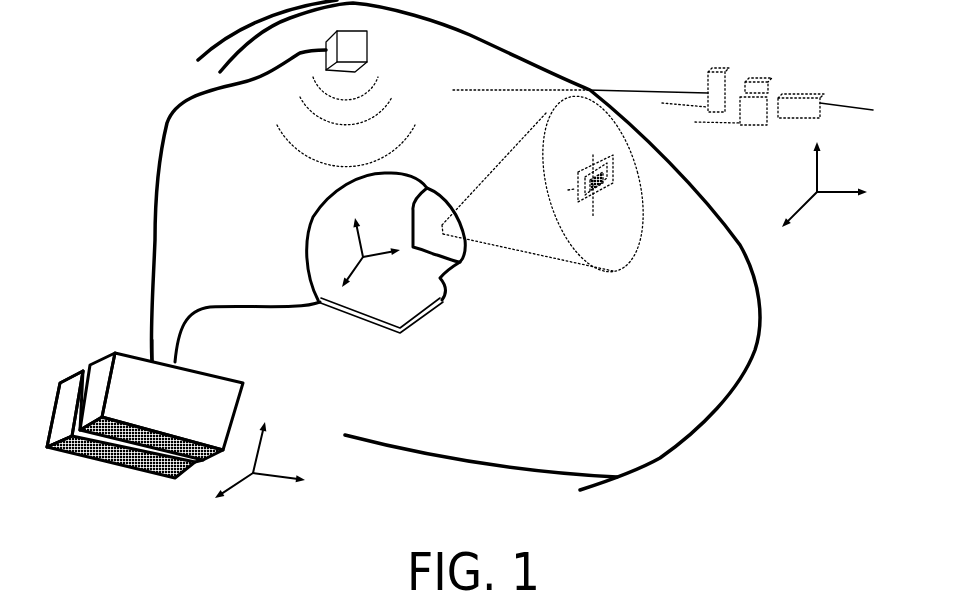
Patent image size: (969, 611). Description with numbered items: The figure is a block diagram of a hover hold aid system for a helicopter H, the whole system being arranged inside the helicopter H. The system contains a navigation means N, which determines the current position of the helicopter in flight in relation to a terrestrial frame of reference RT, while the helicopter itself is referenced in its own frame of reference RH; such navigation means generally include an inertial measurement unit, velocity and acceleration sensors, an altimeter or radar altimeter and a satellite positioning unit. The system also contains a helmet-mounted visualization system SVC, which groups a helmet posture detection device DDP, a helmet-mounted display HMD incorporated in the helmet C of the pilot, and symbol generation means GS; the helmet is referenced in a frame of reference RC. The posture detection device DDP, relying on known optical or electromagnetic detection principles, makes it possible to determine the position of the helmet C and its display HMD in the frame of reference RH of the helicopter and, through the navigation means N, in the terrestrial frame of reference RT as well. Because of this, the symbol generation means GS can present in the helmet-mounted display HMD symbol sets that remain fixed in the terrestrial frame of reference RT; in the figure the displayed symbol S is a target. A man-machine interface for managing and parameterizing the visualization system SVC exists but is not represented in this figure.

The helmet posture detection device DDP is at (367, 40).
The helmet-mounted visualization system SVC is at (301, 146).
The symbol S is at (617, 180).
The helmet-mounted display HMD is at (457, 252).
The helmet C is at (435, 305).
The frame of reference of the helmet RC is at (371, 252).
The helicopter H is at (693, 397).
The symbol generation means GS is at (233, 390).
The navigation means N is at (68, 373).
The frame of reference of the helicopter RH is at (260, 460).
The terrestrial frame of reference RT is at (824, 184).